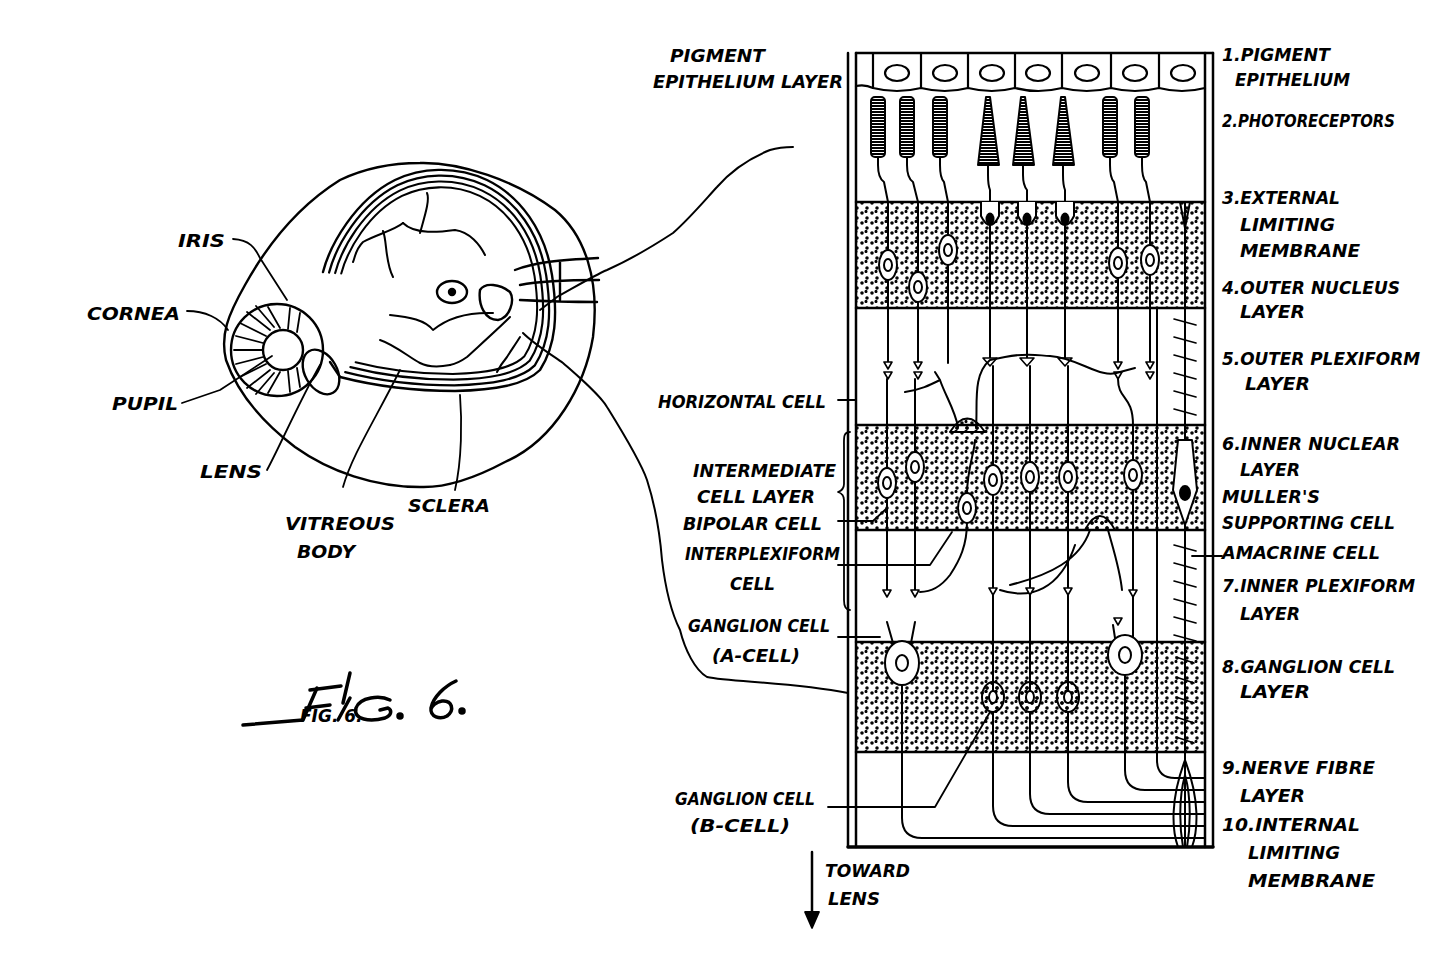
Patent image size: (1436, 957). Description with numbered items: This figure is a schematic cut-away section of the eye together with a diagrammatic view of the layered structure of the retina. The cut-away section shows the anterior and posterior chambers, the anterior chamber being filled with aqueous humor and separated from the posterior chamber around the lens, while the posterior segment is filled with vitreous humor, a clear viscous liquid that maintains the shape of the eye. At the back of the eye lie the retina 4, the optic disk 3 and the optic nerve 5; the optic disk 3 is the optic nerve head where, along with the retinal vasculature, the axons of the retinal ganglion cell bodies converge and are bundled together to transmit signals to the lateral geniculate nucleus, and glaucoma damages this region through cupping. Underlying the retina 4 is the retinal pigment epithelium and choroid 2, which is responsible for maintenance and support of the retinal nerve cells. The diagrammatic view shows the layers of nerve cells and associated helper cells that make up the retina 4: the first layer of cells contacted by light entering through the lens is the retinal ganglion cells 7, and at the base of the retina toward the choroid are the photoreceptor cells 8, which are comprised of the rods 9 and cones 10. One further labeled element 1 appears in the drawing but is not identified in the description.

The optic nerve 1 is at (555, 270).
The retinal pigment epithelium and choroid 2 is at (403, 223).
The optic disk 3 is at (453, 281).
The retina 4 is at (556, 343).
The optic nerve 5 is at (513, 390).
The retinal ganglion cells 7 is at (850, 648).
The photoreceptor cells 8 is at (924, 238).
The rods 9 is at (943, 149).
The cones 10 is at (899, 149).